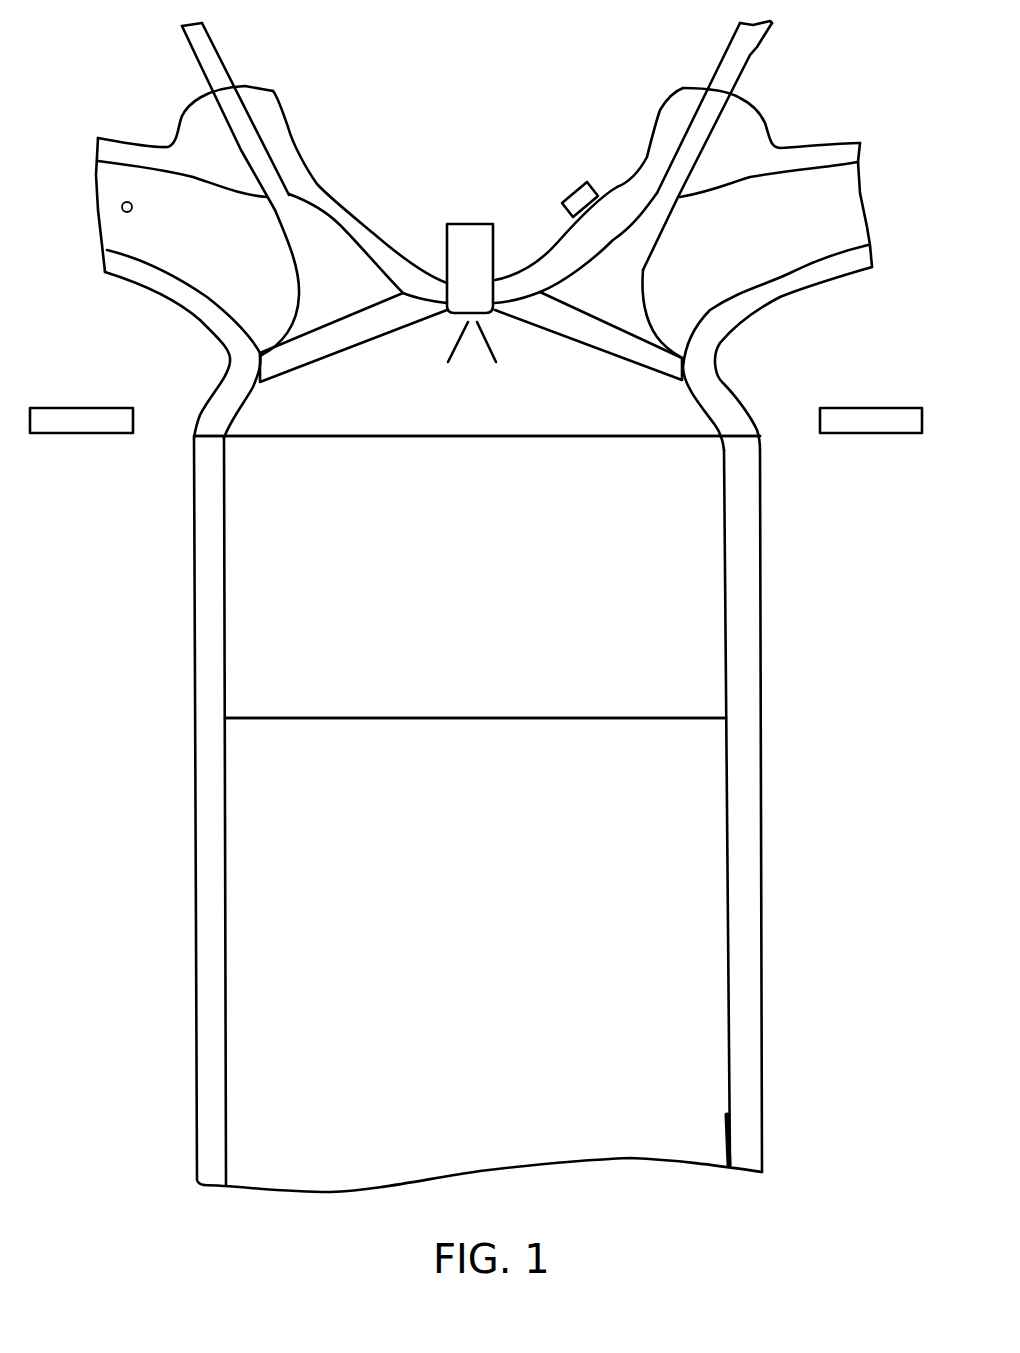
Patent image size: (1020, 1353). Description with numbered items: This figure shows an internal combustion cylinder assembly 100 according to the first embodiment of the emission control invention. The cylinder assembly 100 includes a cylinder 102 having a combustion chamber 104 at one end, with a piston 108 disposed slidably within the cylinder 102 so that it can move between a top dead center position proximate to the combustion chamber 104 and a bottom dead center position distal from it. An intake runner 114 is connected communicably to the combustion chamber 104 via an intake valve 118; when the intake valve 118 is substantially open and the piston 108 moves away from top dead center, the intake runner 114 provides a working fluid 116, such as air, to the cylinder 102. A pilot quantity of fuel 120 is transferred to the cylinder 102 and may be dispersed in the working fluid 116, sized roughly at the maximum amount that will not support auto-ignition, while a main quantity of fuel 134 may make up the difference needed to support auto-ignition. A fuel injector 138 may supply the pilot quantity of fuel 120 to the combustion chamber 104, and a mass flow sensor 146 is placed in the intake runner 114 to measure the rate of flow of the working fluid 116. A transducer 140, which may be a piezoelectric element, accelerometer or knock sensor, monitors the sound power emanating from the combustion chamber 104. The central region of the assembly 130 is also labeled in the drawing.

The internal combustion cylinder assembly 100 is at (452, 1040).
The cylinder 102 is at (705, 800).
The combustion chamber 104 is at (477, 418).
The piston 108 is at (475, 700).
The intake runner 114 is at (210, 236).
The working fluid 116 is at (100, 213).
The intake valve 118 is at (295, 290).
The pilot quantity of fuel 120 is at (452, 350).
The chest region 130 is at (490, 426).
The main quantity of fuel 134 is at (490, 350).
The fuel injector 138 is at (619, 172).
The transducer 140 is at (571, 190).
The mass flow sensor 146 is at (124, 200).